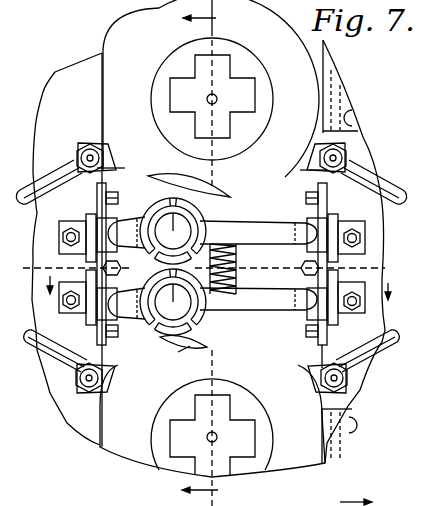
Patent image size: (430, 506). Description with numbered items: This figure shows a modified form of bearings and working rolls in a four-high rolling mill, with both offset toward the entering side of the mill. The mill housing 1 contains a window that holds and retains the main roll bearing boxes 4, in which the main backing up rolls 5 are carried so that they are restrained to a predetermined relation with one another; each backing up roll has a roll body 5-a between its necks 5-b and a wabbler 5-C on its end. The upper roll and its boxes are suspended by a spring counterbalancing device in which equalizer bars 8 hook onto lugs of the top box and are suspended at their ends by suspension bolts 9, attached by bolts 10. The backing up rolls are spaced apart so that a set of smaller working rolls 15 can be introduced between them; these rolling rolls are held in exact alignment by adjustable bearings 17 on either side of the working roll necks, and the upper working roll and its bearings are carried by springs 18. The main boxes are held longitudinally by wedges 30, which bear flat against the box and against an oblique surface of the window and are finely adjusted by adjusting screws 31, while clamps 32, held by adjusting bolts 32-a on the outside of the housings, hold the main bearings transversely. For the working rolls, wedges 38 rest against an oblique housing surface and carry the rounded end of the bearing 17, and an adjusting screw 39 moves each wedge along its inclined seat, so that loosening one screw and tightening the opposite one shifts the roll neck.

The mill housing 1 is at (60, 78).
The main roll bearing box 4 is at (306, 73).
The main backing up roll 5 is at (185, 348).
The roll body 5-a is at (222, 173).
The roll neck 5-b is at (263, 103).
The wabbler 5-C is at (180, 440).
The equalizer bar 8 is at (206, 258).
The suspension bolt 9 is at (356, 492).
The bolt 10 is at (223, 277).
The working roll 15 is at (160, 182).
The adjustable bearing 17 is at (155, 220).
The spring 18 is at (237, 268).
The wedge 30 is at (345, 100).
The adjusting screw 31 is at (357, 118).
The clamp 32 is at (52, 186).
The adjusting bolt 32-a is at (92, 146).
The wedge 38 is at (65, 220).
The adjusting screw 39 is at (63, 236).